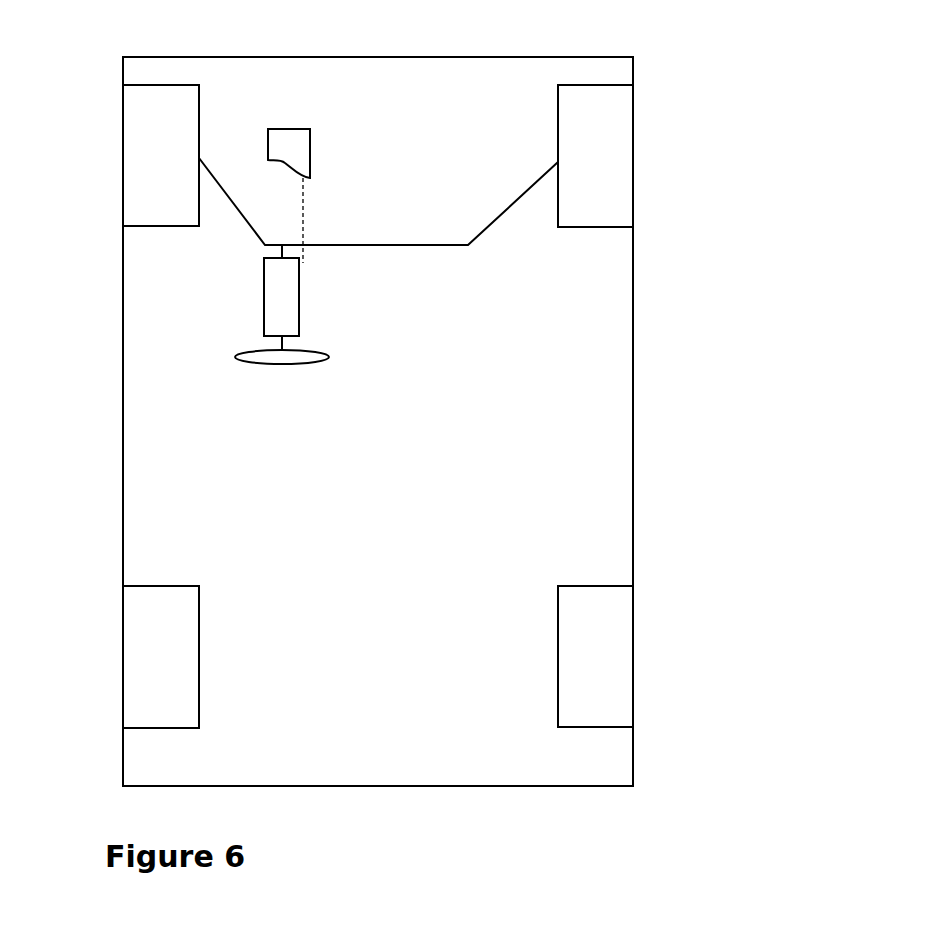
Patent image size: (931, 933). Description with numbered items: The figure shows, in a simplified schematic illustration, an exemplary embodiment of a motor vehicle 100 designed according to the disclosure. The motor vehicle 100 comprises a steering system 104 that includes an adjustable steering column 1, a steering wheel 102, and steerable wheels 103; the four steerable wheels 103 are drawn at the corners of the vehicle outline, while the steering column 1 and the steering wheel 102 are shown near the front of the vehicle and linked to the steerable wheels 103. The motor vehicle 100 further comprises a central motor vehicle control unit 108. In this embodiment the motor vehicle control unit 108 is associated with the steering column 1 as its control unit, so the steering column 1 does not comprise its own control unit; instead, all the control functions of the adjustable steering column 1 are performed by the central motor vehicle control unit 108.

The motor vehicle 100 is at (742, 245).
The steerable wheels 103 is at (155, 149).
The steering column 1 is at (343, 311).
The motor vehicle control unit 108 is at (296, 128).
The steering system 104 is at (252, 278).
The steering wheel 102 is at (263, 361).